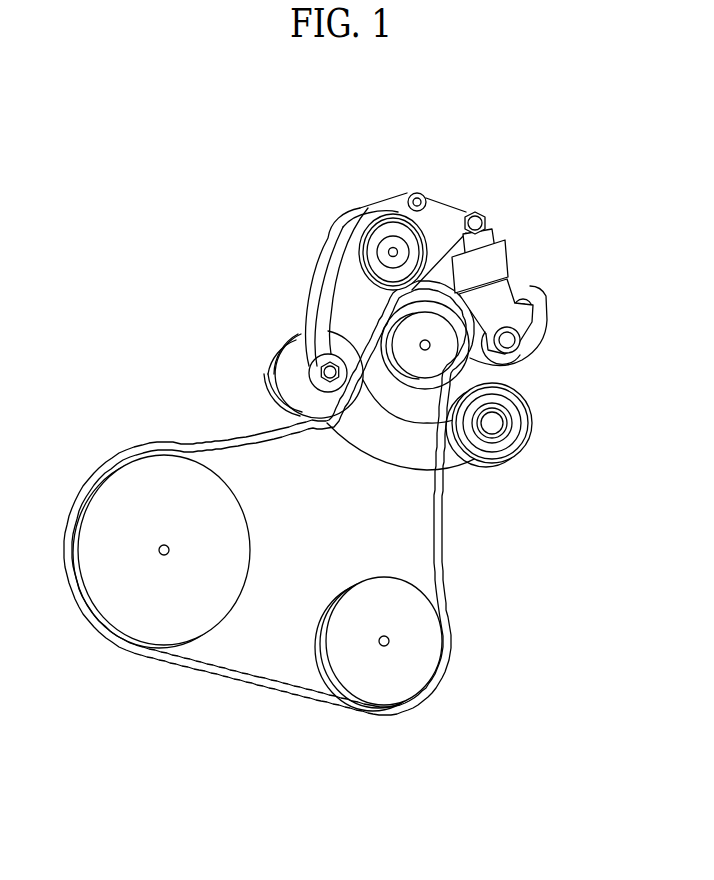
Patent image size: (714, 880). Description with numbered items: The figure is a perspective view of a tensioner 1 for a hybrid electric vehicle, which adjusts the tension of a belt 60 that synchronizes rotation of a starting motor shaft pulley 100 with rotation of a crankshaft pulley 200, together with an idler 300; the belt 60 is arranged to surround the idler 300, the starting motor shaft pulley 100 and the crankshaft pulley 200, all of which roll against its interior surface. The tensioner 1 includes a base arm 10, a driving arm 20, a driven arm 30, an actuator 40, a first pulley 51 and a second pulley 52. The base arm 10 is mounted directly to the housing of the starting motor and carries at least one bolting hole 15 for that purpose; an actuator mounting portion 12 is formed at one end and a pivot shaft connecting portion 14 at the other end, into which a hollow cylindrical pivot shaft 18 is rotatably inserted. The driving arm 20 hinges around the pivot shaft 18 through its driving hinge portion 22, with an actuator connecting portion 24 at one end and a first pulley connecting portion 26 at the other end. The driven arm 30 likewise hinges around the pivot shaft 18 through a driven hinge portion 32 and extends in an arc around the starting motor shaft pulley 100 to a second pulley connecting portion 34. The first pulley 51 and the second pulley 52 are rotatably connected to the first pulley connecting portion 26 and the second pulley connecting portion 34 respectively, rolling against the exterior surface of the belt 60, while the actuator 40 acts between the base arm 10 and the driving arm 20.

The tensioner 1 is at (229, 215).
The base arm 10 is at (530, 292).
The actuator mounting portion 12 is at (512, 341).
The pivot shaft connecting portion 14 is at (326, 244).
The bolting hole 15 is at (417, 192).
The pivot shaft 18 is at (358, 212).
The driving arm 20 is at (441, 213).
The driving hinge portion 22 is at (384, 240).
The actuator connecting portion 24 is at (479, 217).
The first pulley connecting portion 26 is at (270, 368).
The driven arm 30 is at (400, 472).
The driven hinge portion 32 is at (336, 227).
The second pulley connecting portion 34 is at (498, 423).
The actuator 40 is at (500, 266).
The first pulley 51 is at (276, 386).
The second pulley 52 is at (500, 441).
The belt 60 is at (300, 694).
The starting motor shaft pulley 100 is at (440, 360).
The crankshaft pulley 200 is at (195, 626).
The idler 300 is at (414, 684).